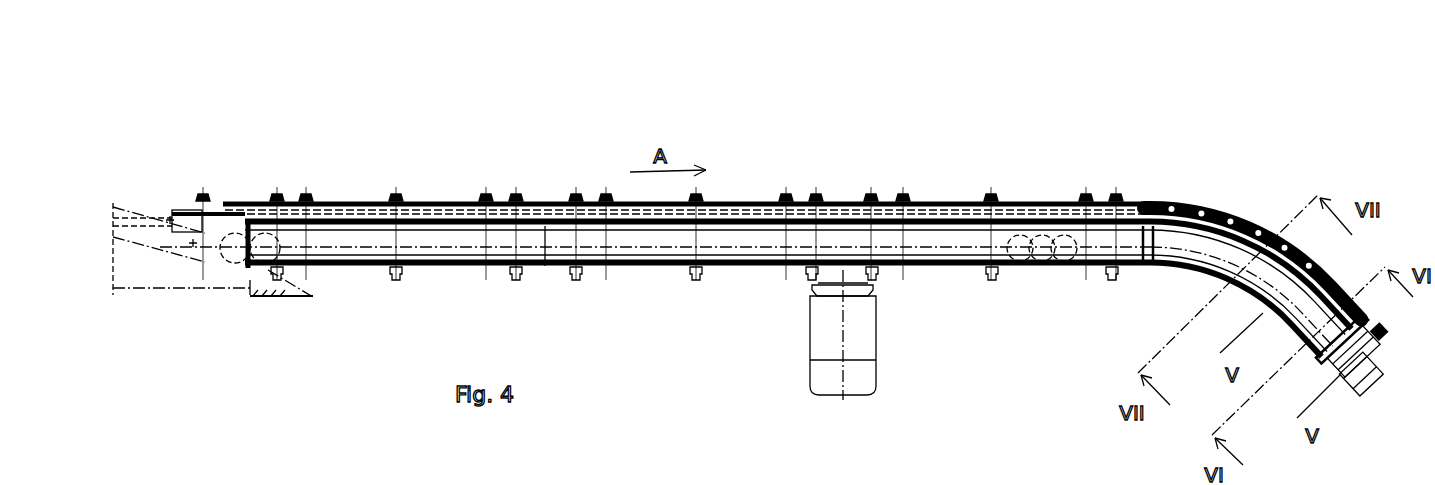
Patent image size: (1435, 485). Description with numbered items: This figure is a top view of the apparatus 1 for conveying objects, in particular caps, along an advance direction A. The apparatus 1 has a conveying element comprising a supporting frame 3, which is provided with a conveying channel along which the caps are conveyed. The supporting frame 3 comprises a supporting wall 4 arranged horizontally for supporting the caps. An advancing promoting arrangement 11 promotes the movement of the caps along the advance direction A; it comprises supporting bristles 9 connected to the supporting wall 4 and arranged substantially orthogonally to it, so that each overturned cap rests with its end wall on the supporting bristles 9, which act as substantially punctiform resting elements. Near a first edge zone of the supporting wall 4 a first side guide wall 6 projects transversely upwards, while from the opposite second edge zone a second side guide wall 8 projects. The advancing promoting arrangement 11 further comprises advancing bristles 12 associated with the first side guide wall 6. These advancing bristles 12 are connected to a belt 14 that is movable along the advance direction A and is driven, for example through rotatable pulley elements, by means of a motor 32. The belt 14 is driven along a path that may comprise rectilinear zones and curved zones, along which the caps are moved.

The apparatus 1 is at (921, 91).
The supporting frame 3 is at (618, 266).
The supporting wall 4 is at (422, 250).
The first side guide wall 6 is at (953, 232).
The second side guide wall 8 is at (928, 268).
The supporting bristles 9 is at (740, 253).
The advancing promoting arrangement 11 is at (1030, 217).
The advancing bristles 12 is at (1000, 250).
The belt 14 is at (1118, 262).
The motor 32 is at (826, 376).